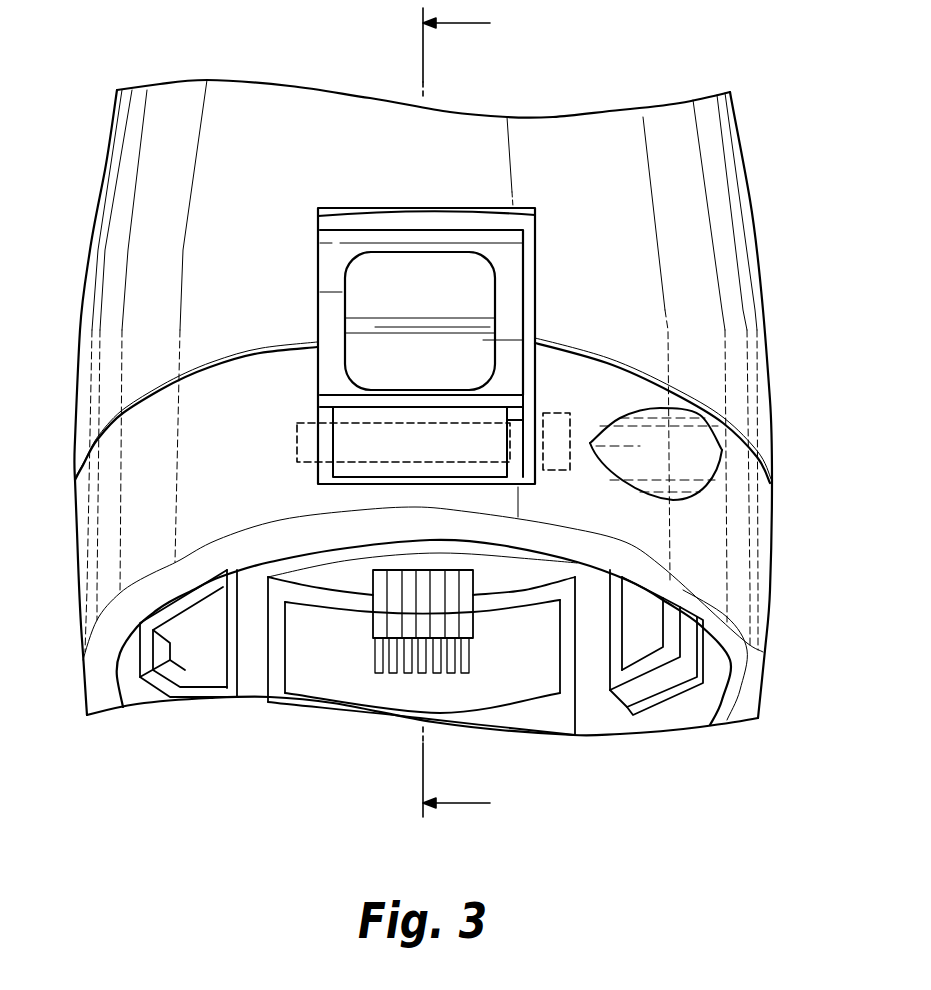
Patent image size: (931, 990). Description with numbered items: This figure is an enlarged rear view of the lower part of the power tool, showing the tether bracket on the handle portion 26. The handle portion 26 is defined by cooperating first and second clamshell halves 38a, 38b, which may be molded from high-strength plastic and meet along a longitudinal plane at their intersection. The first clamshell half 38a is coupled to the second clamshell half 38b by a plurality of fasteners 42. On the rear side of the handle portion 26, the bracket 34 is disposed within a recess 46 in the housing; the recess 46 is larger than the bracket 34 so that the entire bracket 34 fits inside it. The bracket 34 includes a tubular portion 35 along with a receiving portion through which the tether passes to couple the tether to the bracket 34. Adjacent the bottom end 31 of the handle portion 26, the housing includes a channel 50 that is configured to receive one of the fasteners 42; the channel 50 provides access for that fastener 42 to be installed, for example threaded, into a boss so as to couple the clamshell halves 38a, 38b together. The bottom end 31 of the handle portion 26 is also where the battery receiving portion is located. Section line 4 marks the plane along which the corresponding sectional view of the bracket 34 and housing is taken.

The handle portion 26 is at (160, 165).
The first clamshell half 38a is at (287, 103).
The second clamshell half 38b is at (562, 133).
The section line 4- 4 is at (465, 412).
The bracket 34 is at (513, 370).
The recess 46 is at (470, 307).
The fasteners 42 is at (553, 470).
The channel 50 is at (640, 445).
The tubular portion 35 is at (490, 470).
The bottom end 31 is at (713, 610).